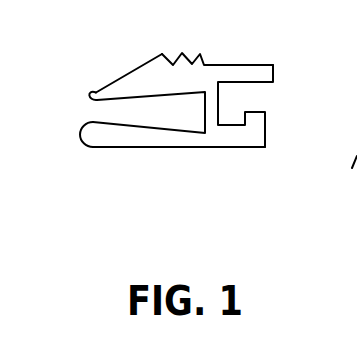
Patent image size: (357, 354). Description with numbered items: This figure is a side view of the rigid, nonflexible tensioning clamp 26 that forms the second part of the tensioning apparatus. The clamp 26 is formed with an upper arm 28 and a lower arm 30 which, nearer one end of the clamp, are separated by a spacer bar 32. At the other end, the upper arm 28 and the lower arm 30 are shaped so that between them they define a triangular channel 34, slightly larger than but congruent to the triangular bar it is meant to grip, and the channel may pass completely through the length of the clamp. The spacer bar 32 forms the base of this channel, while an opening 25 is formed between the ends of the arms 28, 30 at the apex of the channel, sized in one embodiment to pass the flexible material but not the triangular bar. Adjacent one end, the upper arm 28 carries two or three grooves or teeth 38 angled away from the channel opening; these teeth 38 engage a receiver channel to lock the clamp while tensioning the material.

The opening 25 is at (88, 110).
The tensioning clamp 26 is at (95, 148).
The upper arm 28 is at (140, 80).
The lower arm 30 is at (178, 138).
The spacer bar 32 is at (213, 99).
The triangular channel 34 is at (170, 113).
The teeth 38 is at (208, 62).